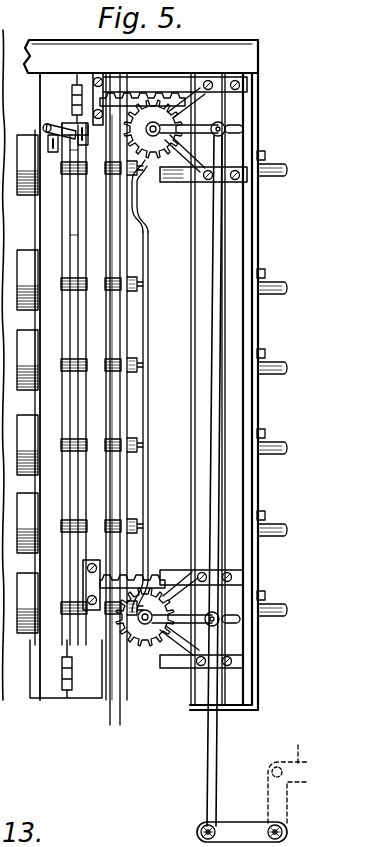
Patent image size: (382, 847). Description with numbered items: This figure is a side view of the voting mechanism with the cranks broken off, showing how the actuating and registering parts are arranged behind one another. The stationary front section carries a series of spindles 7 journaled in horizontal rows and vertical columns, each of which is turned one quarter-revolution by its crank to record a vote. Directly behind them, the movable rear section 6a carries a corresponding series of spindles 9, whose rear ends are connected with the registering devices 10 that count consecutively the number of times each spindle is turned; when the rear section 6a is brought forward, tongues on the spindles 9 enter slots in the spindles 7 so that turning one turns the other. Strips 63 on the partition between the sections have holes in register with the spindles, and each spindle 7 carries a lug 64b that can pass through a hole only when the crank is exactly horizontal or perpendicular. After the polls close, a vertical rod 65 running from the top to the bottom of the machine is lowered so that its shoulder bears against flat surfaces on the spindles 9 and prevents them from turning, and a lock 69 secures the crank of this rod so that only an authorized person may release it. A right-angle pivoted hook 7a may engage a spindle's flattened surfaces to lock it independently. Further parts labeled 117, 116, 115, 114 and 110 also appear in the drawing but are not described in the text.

The rear section 6a is at (60, 88).
The lock 69 is at (48, 142).
The vertical rod 65 is at (80, 333).
The strips 63 is at (149, 345).
The spindles 9 is at (130, 372).
The spindles 7 is at (278, 367).
The right-angle pivoted hook 7a is at (263, 518).
The lug 64b is at (150, 520).
The registering devices 10 is at (18, 632).
The rack 117 is at (137, 92).
The gear 116 is at (158, 114).
The arm 115 is at (203, 133).
The link 114 is at (215, 748).
The shaft 110 is at (288, 778).